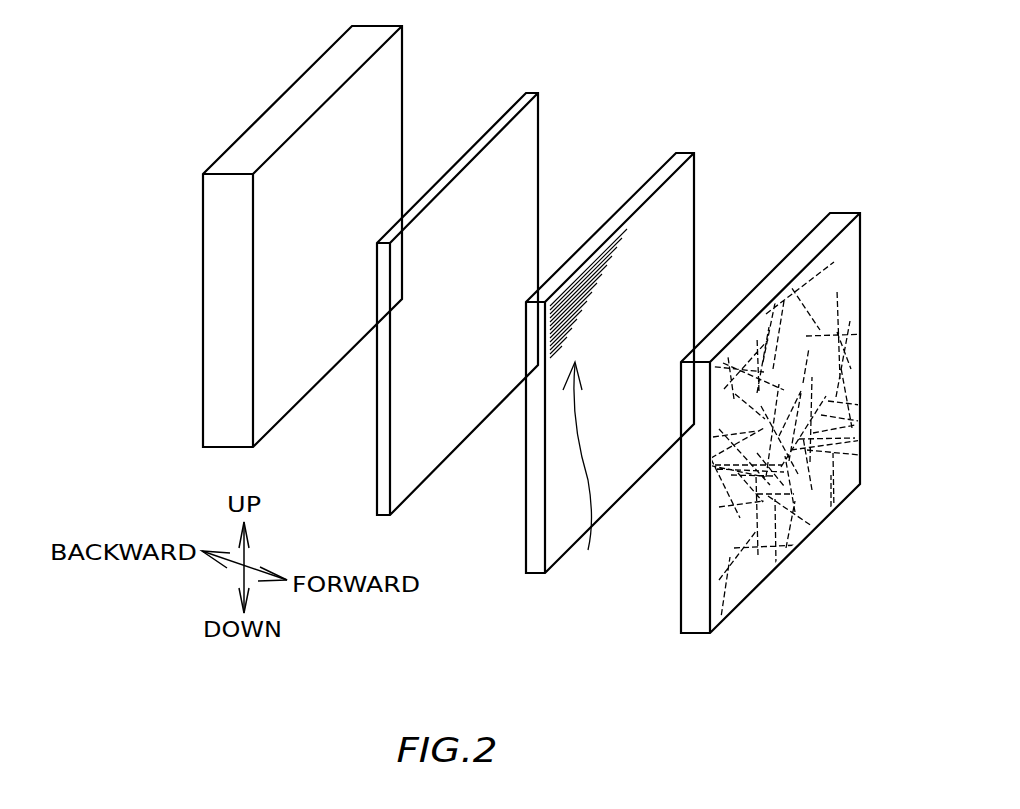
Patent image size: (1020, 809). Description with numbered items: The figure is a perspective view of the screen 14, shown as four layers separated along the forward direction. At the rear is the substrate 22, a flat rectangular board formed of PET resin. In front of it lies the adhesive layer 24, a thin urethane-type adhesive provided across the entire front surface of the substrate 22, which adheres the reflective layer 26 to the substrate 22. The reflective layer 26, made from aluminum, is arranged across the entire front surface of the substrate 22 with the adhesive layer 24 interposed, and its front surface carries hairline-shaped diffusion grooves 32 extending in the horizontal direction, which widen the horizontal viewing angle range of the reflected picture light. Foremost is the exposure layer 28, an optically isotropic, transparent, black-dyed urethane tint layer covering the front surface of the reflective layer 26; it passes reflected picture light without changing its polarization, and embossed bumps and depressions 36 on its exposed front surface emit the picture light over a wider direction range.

The screen 14 is at (678, 67).
The substrate 22 is at (282, 117).
The adhesive layer 24 is at (492, 127).
The reflective layer 26 is at (644, 188).
The exposure layer 28 is at (782, 399).
The diffusion grooves 32 is at (581, 474).
The bumps and depressions 36 is at (845, 500).